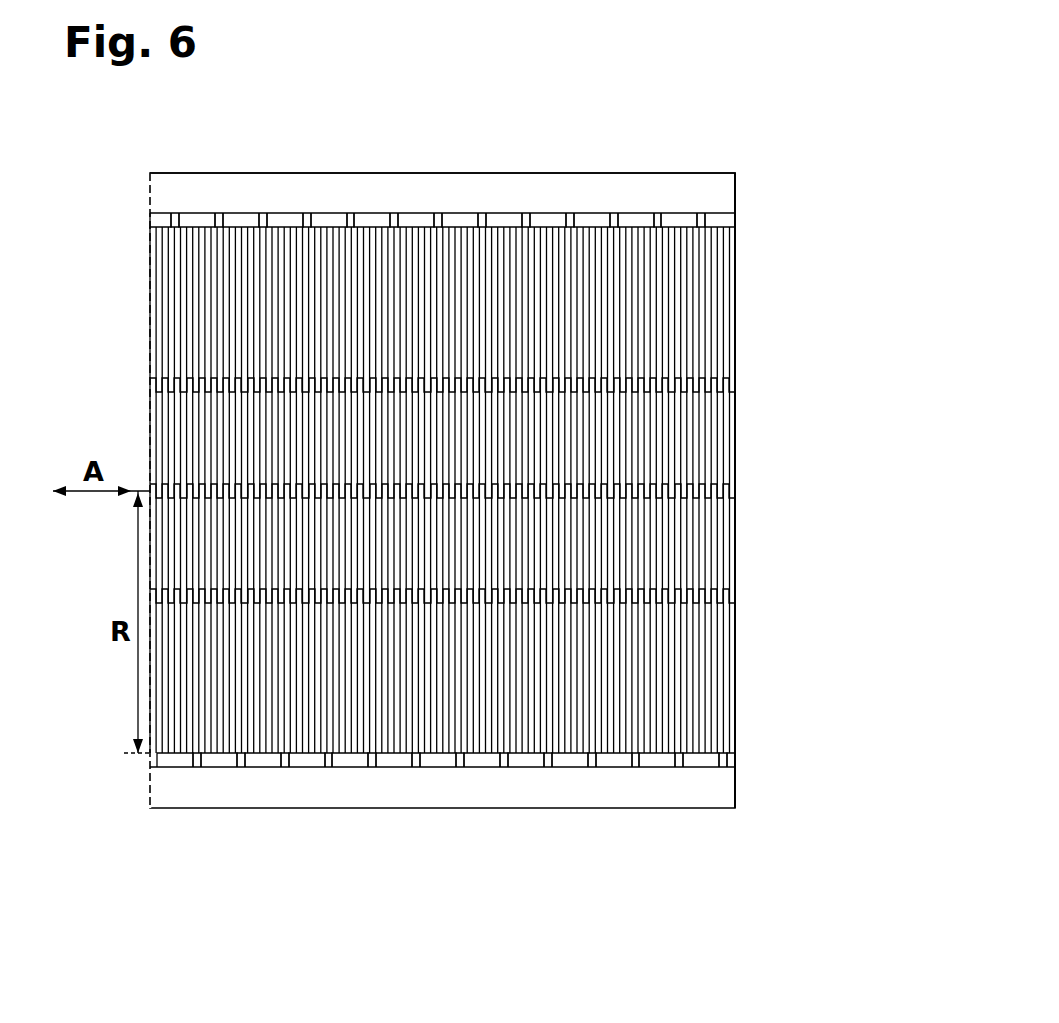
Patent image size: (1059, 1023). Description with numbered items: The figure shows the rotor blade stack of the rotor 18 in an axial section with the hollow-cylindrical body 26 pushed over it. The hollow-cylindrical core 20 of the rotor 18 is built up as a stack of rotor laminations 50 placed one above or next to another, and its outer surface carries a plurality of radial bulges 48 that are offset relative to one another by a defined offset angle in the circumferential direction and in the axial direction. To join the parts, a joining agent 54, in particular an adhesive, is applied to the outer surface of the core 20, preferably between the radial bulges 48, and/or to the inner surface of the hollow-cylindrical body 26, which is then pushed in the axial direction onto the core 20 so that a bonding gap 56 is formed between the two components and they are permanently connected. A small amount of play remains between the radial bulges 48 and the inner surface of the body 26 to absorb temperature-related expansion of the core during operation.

The rotor 18 is at (126, 183).
The hollow-cylindrical core 20 is at (735, 660).
The hollow-cylindrical body 26 is at (453, 190).
The radial bulges 48 is at (351, 213).
The rotor laminations 50 is at (713, 308).
The joining agent 54 is at (722, 222).
The bonding gap 56 is at (657, 762).